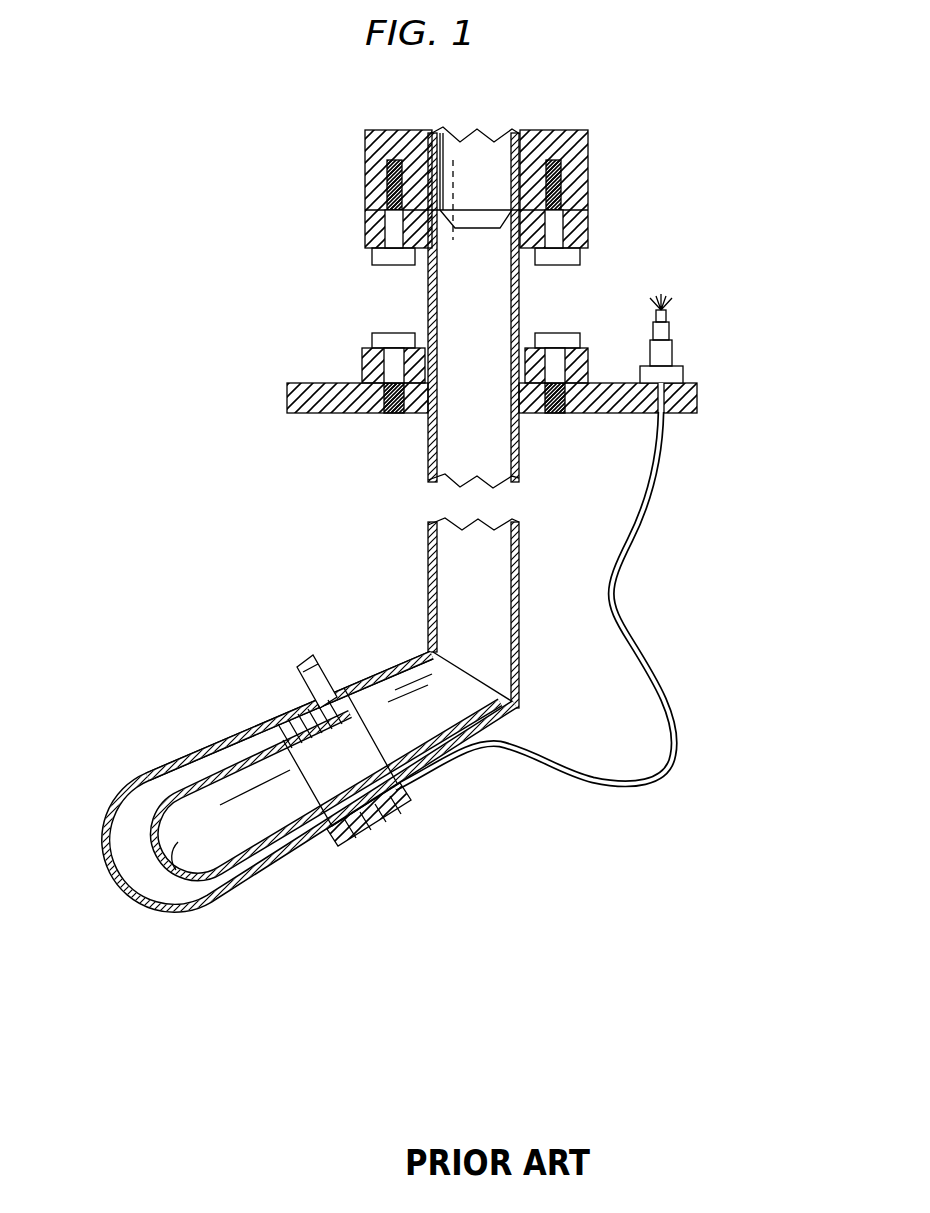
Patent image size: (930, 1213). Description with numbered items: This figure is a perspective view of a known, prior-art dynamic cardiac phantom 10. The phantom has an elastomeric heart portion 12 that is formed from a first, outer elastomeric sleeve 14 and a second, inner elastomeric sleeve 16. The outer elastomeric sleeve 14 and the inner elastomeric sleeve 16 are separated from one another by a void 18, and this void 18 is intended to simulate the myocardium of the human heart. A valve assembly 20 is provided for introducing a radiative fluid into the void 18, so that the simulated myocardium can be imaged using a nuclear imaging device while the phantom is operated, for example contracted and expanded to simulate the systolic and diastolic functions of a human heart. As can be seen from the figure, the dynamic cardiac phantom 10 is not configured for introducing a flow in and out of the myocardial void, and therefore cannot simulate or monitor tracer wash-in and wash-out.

The dynamic cardiac phantom 10 is at (717, 150).
The elastomeric heart portion 12 is at (283, 803).
The first outer elastomeric sleeve 14 is at (283, 794).
The second inner elastomeric sleeve 16 is at (157, 813).
The void 18 is at (212, 762).
The valve assembly 20 is at (670, 345).